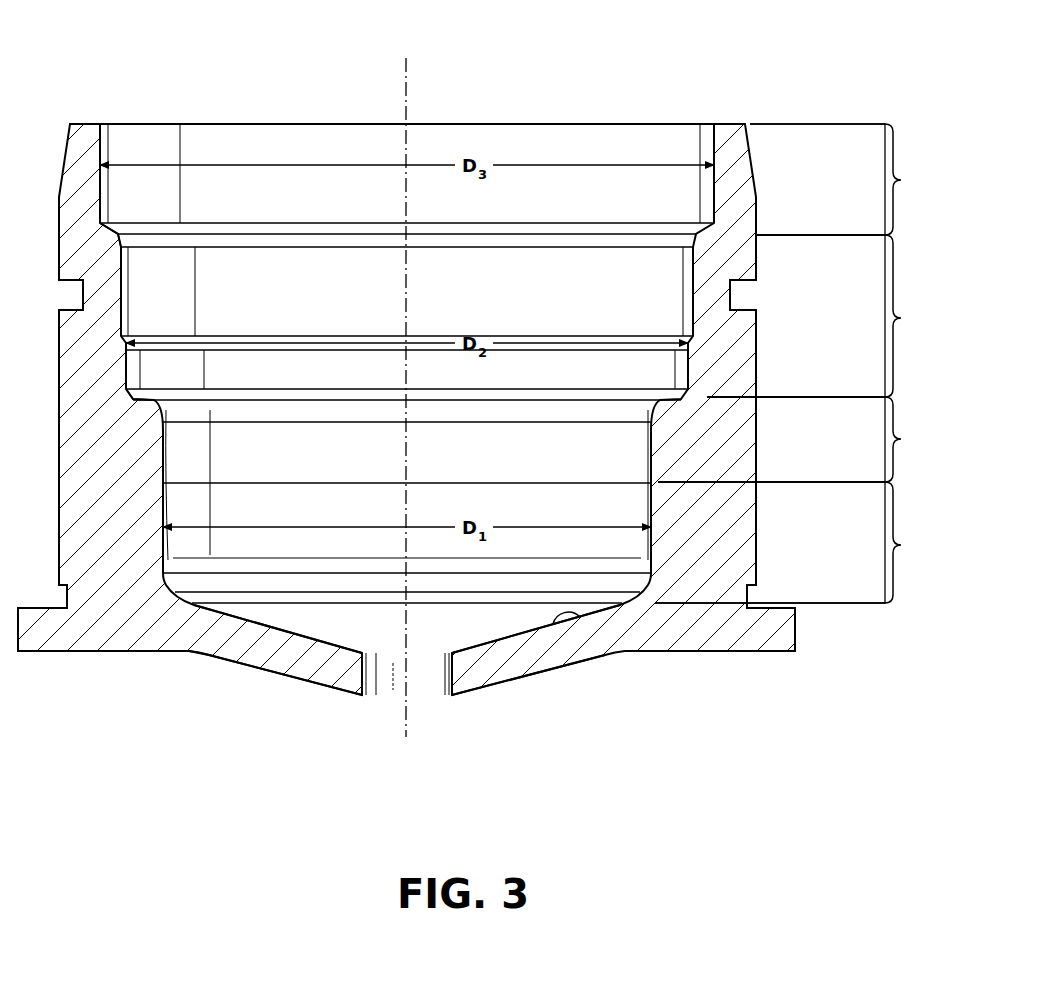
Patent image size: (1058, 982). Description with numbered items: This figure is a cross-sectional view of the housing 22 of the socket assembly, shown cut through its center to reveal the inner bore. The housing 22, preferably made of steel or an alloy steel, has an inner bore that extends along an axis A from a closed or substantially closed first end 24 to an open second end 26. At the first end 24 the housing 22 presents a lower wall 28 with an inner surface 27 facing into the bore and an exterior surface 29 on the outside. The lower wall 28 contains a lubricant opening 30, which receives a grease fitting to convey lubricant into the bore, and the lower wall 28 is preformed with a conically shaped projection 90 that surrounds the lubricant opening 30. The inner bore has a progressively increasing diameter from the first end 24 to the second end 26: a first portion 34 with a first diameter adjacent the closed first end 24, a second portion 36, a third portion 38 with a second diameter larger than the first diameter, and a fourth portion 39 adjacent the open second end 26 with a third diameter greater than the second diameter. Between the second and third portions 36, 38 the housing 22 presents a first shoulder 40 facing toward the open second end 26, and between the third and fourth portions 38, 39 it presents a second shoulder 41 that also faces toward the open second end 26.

The housing 22 is at (164, 94).
The axis A is at (406, 68).
The open second end 26 is at (725, 124).
The second shoulder 41 is at (118, 232).
The first shoulder 40 is at (143, 398).
The lower wall 28 is at (278, 648).
The lubricant opening 30 is at (378, 668).
The conically shaped projection 90 is at (470, 694).
The exterior surface 29 is at (555, 667).
The closed first end 24 is at (573, 617).
The inner surface 27 is at (278, 629).
The fourth portion 39 is at (840, 179).
The third portion 38 is at (819, 316).
The second portion 36 is at (794, 439).
The first portion 34 is at (793, 542).